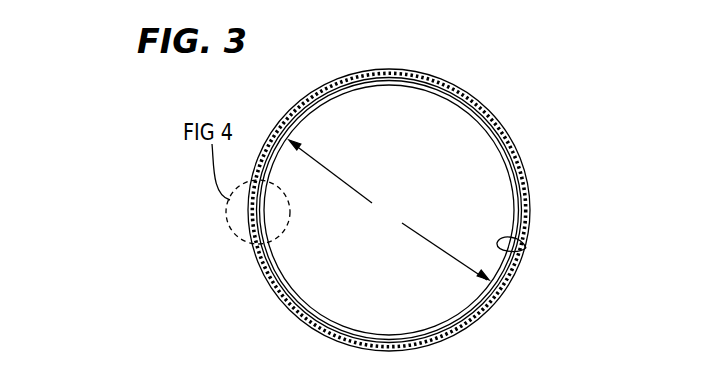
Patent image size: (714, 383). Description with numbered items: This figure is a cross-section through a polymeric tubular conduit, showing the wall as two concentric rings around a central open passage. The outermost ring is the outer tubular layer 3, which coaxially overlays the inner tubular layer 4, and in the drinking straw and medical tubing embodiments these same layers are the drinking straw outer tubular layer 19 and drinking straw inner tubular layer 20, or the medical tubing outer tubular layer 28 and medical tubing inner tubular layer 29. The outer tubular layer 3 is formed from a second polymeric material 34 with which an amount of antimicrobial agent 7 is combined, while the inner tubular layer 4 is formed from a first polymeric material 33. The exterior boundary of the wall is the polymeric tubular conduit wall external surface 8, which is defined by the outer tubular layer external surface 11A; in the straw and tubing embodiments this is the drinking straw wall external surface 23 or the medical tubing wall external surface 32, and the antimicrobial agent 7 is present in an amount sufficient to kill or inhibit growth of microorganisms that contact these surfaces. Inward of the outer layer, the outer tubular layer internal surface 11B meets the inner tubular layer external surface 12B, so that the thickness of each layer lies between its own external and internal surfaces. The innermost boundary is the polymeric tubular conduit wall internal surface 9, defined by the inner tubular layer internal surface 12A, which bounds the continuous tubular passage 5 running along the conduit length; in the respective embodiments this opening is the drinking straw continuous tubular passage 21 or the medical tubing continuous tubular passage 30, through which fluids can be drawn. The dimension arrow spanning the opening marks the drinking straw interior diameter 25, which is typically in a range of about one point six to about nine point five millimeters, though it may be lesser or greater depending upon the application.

The polymeric tubular conduit wall external surface 8 is at (402, 185).
The outer tubular layer external surface 11A is at (402, 185).
The drinking straw wall external surface 23 is at (402, 185).
The medical tubing wall external surface 32 is at (432, 79).
The outer tubular layer 3 is at (453, 203).
The antimicrobial agent 7 is at (453, 203).
The drinking straw outer tubular layer 19 is at (453, 203).
The medical tubing outer tubular layer 28 is at (453, 203).
The second polymeric material 34 is at (487, 116).
The inner tubular layer 4 is at (462, 210).
The drinking straw inner tubular layer 20 is at (462, 210).
The medical tubing inner tubular layer 29 is at (462, 210).
The first polymeric material 33 is at (505, 162).
The outer tubular layer internal surface 11B is at (445, 210).
The inner tubular layer external surface 12B is at (523, 192).
The polymeric tubular conduit wall internal surface 9 is at (556, 255).
The inner tubular layer internal surface 12A is at (526, 248).
The drinking straw interior diameter 25 is at (389, 210).
The continuous tubular passage 5 is at (380, 275).
The drinking straw continuous tubular passage 21 is at (380, 275).
The medical tubing continuous tubular passage 30 is at (417, 288).